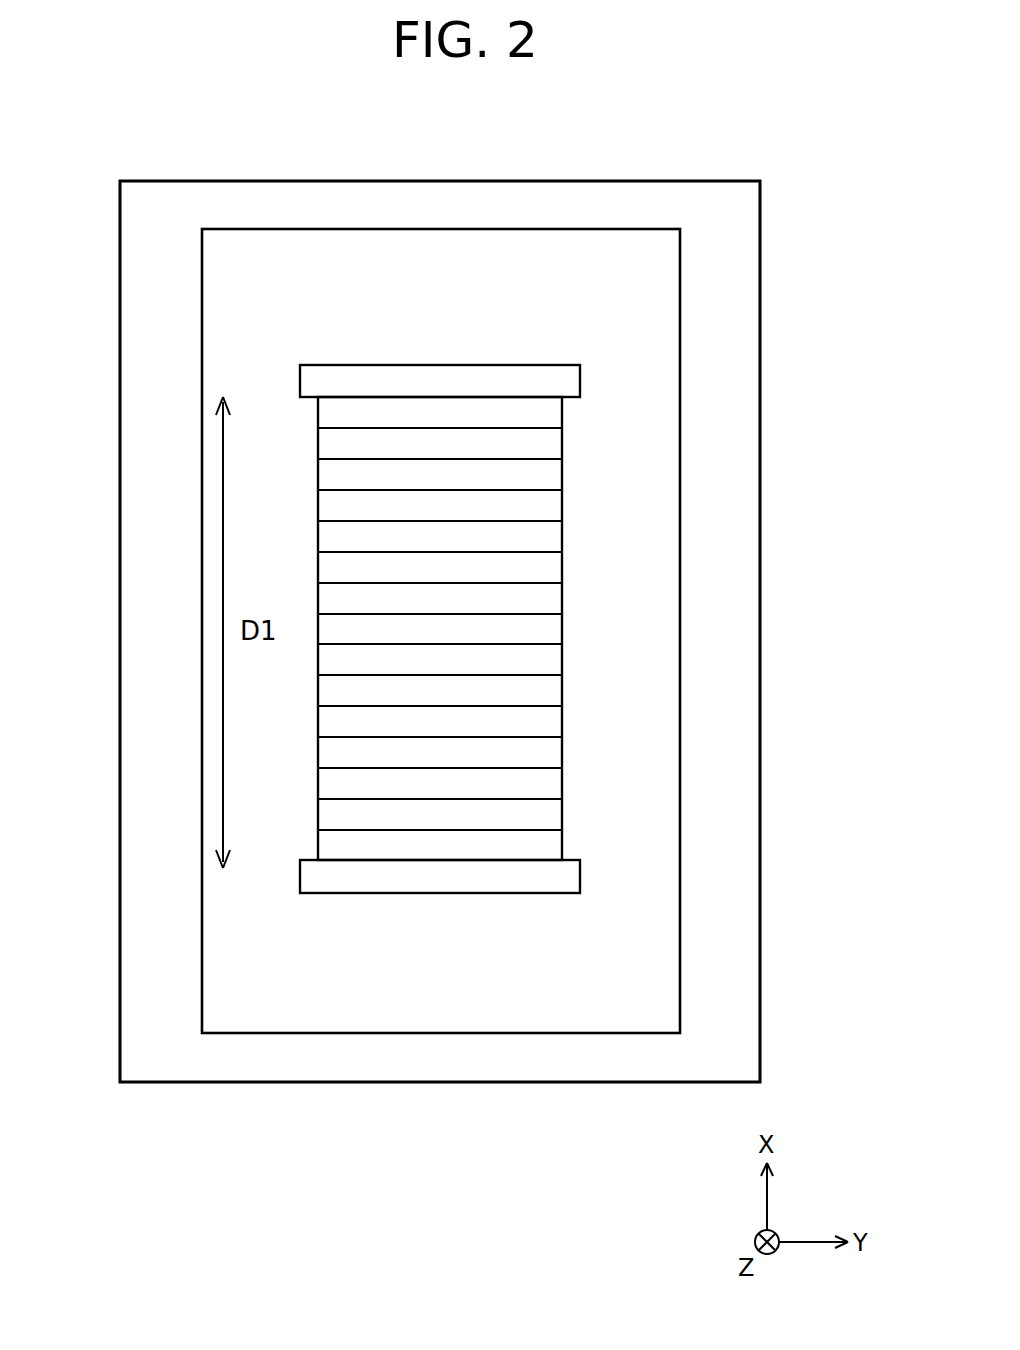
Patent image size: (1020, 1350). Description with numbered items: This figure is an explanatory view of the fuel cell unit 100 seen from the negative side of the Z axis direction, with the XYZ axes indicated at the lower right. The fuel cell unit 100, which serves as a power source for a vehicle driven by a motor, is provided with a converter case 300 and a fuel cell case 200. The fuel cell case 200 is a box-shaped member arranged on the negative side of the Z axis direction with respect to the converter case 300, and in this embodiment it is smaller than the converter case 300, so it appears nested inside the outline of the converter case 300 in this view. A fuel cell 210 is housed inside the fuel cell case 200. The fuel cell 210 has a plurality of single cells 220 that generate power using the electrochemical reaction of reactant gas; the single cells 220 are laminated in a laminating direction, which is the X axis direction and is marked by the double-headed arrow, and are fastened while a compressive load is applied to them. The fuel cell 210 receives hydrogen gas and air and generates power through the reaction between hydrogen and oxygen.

The fuel cell unit 100 is at (86, 172).
The converter case 300 is at (698, 181).
The fuel cell case 200 is at (611, 229).
The fuel cell 210 is at (447, 629).
The single cell 220 is at (346, 478).